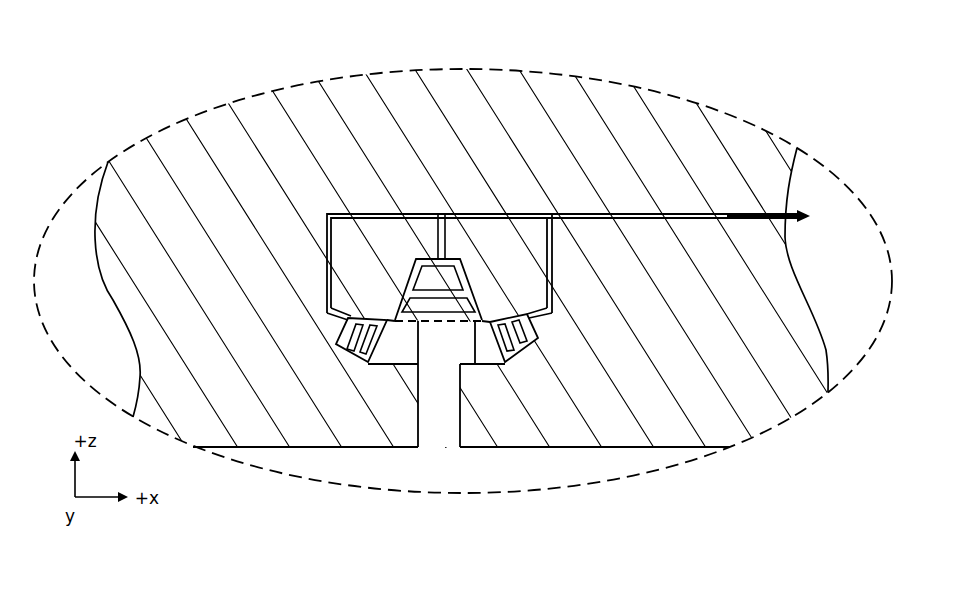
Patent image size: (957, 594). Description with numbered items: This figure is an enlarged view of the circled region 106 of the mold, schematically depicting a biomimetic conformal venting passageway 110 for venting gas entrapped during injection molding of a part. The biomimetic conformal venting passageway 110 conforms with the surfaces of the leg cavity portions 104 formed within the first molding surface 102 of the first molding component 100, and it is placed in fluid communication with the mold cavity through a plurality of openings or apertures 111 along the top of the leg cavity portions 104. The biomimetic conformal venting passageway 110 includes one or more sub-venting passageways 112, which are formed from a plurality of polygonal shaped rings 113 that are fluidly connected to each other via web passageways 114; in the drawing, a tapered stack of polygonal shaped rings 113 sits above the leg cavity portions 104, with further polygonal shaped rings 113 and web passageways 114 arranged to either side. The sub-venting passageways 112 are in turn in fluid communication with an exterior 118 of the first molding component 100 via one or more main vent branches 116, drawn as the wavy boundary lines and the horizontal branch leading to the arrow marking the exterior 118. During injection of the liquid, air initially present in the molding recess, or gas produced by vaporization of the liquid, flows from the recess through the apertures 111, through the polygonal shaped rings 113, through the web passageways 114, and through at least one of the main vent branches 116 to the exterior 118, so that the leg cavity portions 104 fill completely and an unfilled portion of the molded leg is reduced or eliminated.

The first molding component 100 is at (474, 154).
The first molding surface 102 is at (630, 448).
The leg cavity portions 104 is at (424, 354).
The circled region 106 is at (742, 106).
The biomimetic conformal venting passageway 110 is at (369, 182).
The apertures 111 is at (380, 338).
The sub-venting passageways 112 is at (474, 264).
The polygonal shaped rings 113 is at (445, 258).
The web passageways 114 is at (420, 268).
The main vent branches 116 is at (437, 214).
The exterior 118 is at (791, 222).